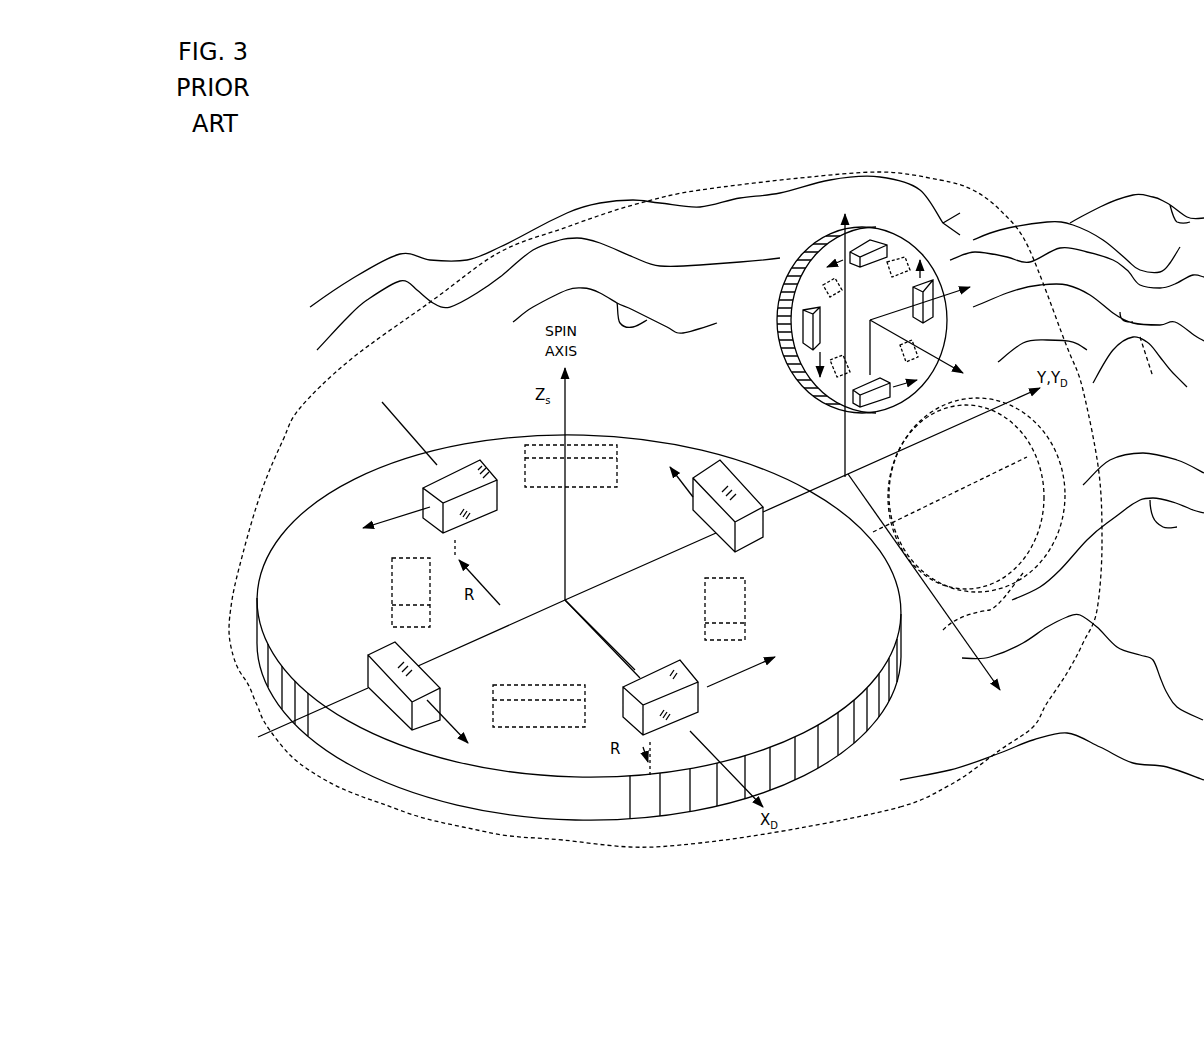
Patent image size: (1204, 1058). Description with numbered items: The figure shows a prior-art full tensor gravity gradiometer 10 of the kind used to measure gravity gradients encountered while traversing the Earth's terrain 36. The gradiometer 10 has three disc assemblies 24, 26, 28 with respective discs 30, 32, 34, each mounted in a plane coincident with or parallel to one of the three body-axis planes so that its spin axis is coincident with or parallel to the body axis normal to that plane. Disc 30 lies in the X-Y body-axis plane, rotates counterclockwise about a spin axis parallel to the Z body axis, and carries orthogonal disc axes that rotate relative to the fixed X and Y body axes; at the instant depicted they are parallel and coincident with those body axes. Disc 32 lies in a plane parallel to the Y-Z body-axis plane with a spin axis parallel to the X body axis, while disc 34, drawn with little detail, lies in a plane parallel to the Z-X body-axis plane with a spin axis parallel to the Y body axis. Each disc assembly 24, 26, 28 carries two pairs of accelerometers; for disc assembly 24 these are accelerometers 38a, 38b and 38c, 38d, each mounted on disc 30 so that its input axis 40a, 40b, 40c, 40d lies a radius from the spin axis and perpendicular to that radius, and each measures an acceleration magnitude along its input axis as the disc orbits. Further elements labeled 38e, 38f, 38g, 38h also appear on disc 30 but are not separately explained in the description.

The full tensor gravity gradiometer 10 is at (318, 777).
The disc assembly 24 is at (403, 802).
The disc assembly 26 is at (780, 253).
The disc assembly 28 is at (1067, 445).
The disc 30 is at (617, 825).
The disc 32 is at (837, 423).
The disc 34 is at (929, 593).
The terrain 36 is at (1053, 207).
The accelerometer 38a is at (699, 700).
The accelerometer 38b is at (455, 470).
The accelerometer 38c is at (707, 470).
The accelerometer 38d is at (407, 652).
The accelerometer 38e is at (747, 640).
The accelerometer 38f is at (390, 573).
The accelerometer 38g is at (598, 442).
The accelerometer 38h is at (513, 728).
The input axis 40a is at (733, 675).
The input axis 40b is at (413, 508).
The input axis 40c is at (682, 483).
The input axis 40d is at (452, 724).